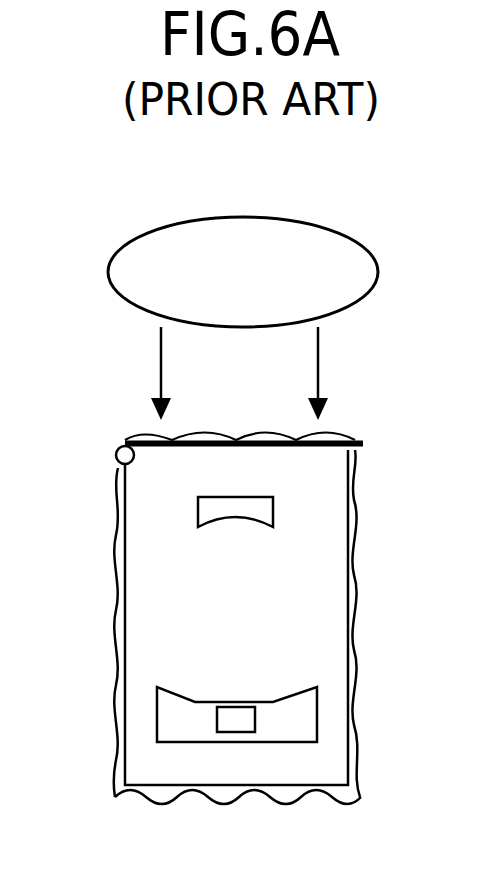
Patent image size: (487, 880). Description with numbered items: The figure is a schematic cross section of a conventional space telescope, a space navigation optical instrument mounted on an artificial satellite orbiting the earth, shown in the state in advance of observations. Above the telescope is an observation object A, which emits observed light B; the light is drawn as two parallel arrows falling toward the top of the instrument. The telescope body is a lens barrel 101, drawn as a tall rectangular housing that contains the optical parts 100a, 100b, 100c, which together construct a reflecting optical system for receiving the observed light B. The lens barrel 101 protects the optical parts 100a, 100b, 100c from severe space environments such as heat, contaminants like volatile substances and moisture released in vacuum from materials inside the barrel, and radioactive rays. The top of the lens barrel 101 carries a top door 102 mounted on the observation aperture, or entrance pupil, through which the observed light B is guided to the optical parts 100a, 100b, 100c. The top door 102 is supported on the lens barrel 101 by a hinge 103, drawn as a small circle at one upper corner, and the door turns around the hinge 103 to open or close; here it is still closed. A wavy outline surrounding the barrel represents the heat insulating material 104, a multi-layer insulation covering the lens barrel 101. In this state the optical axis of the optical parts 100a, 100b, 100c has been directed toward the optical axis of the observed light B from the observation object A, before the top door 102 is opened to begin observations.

The observation object A is at (241, 217).
The observed light B is at (321, 360).
The lens barrel 101 is at (118, 583).
The top door 102 is at (213, 440).
The hinge 103 is at (118, 448).
The heat insulating material 104 is at (114, 500).
The optical part 100a is at (317, 717).
The optical part 100b is at (273, 507).
The optical part 100c is at (237, 732).